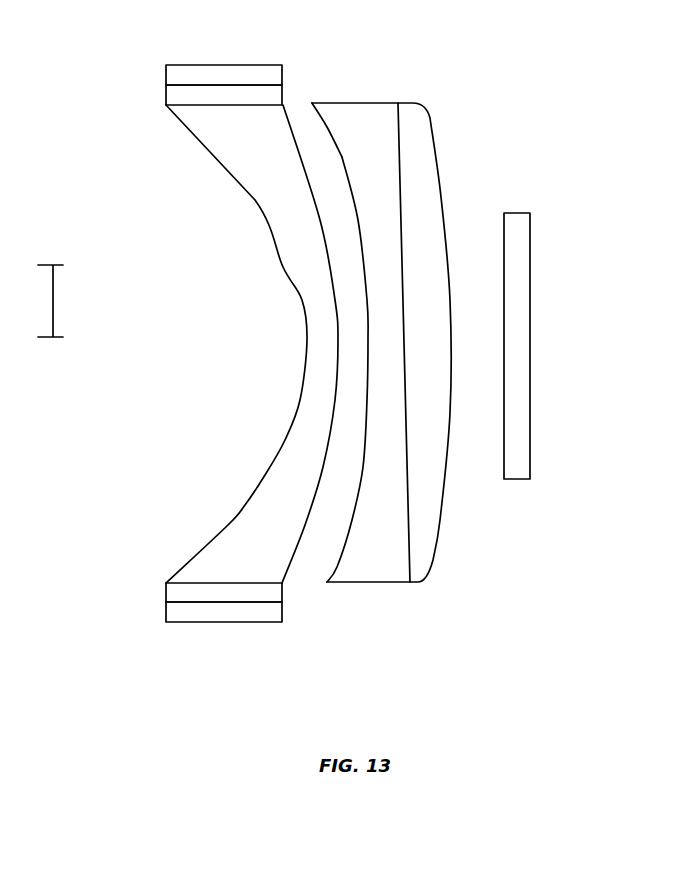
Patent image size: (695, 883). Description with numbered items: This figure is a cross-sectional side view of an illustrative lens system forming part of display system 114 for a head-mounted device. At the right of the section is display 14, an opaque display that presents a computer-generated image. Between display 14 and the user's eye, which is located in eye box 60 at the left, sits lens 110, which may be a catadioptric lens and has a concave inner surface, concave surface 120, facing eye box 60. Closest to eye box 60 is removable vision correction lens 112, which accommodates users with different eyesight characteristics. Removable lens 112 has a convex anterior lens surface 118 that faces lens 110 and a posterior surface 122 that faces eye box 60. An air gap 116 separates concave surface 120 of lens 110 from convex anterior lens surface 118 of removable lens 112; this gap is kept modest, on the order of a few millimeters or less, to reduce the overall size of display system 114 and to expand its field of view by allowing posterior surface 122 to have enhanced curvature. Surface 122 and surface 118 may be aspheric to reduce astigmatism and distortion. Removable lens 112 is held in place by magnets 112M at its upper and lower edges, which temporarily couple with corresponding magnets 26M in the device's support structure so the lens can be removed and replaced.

The display 14 is at (521, 479).
The eye box 60 is at (50, 338).
The lens 110 is at (364, 336).
The removable vision correction lens 112 is at (249, 371).
The display system 114 is at (150, 668).
The air gap 116 is at (307, 547).
The convex anterior lens surface 118 is at (293, 560).
The concave surface 120 is at (310, 87).
The posterior surface 122 is at (233, 178).
The magnets 26M is at (177, 77).
The magnets 112M is at (177, 98).